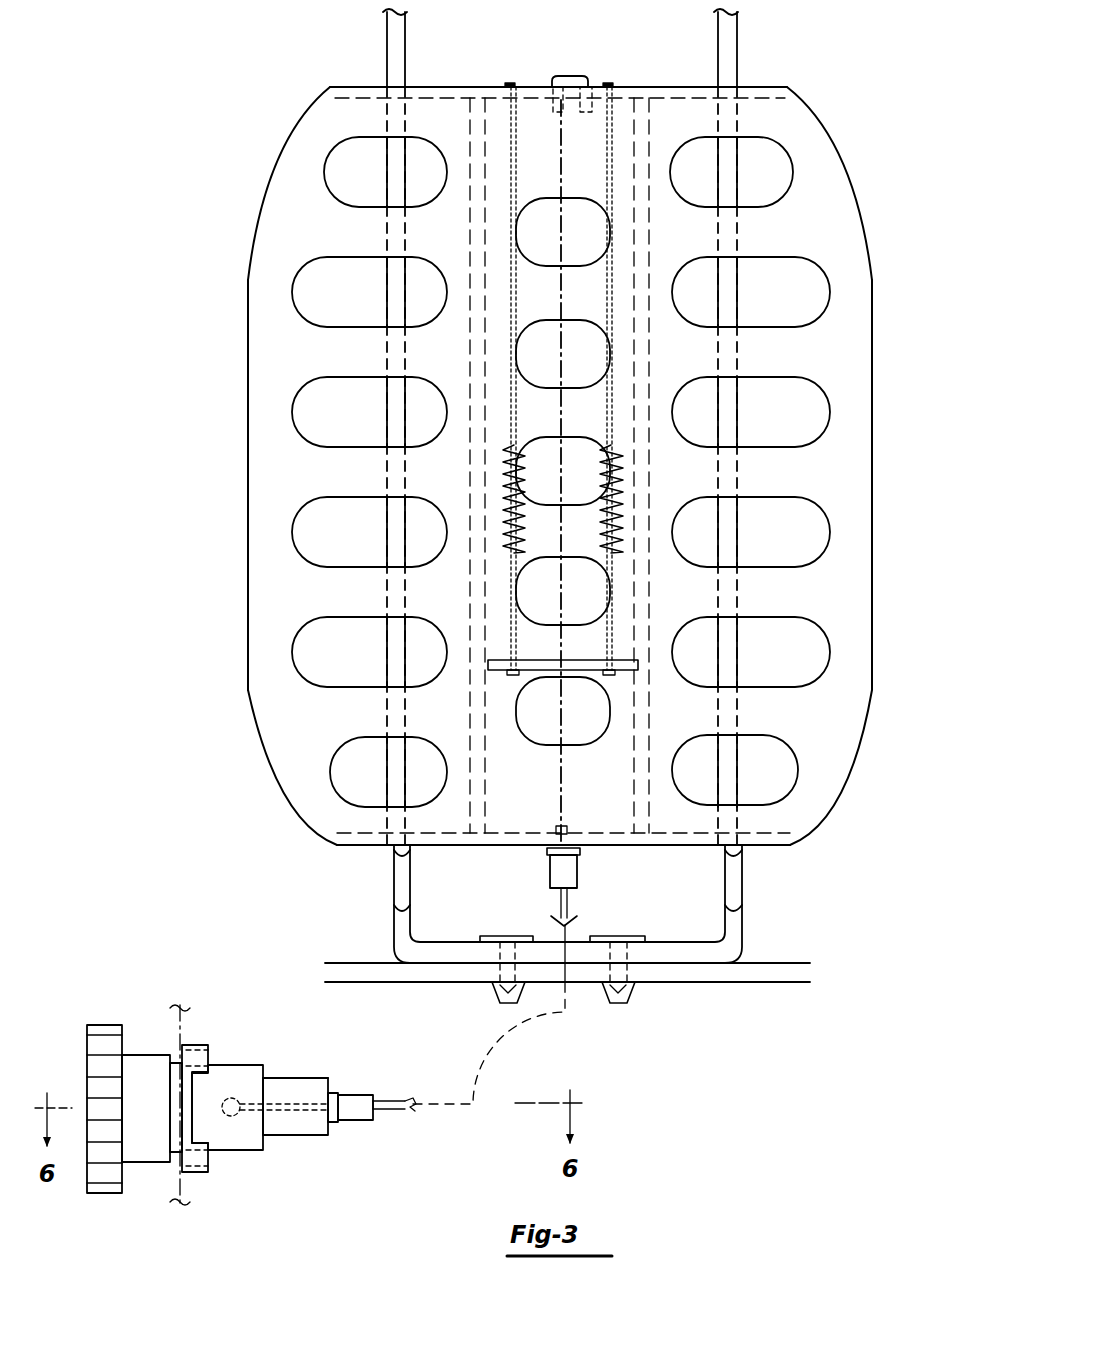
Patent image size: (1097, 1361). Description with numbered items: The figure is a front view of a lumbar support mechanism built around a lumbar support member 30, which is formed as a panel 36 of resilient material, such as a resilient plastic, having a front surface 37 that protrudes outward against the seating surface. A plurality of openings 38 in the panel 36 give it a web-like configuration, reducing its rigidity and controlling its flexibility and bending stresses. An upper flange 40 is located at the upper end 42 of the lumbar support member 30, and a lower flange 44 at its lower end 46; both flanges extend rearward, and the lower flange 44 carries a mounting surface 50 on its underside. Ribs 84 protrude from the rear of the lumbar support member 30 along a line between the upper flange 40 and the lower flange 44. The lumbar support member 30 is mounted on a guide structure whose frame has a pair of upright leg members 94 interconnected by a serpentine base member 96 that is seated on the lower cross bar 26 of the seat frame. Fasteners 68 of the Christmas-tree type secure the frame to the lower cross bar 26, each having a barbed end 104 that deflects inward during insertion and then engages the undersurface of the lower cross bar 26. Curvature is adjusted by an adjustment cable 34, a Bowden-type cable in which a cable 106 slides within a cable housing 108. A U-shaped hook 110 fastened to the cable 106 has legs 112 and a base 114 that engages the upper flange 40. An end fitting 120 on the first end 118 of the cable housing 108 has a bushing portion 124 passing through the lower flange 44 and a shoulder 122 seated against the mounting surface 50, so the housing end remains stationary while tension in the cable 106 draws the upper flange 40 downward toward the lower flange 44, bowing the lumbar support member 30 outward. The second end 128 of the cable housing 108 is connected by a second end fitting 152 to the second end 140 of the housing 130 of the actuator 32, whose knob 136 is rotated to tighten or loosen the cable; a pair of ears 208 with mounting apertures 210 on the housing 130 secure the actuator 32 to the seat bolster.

The lower cross bar 26 is at (790, 983).
The lumbar support member 30 is at (246, 398).
The actuator 32 is at (298, 1147).
The adjustment cable 34 is at (552, 1055).
The panel 36 is at (830, 135).
The front surface 37 is at (248, 600).
The openings 38 is at (295, 415).
The upper flange 40 is at (765, 86).
The upper end 42 is at (330, 108).
The lower flange 44 is at (337, 845).
The lower end 46 is at (800, 835).
The mounting surface 50 is at (762, 850).
The fasteners 68 is at (490, 936).
The ribs 84 is at (470, 123).
The leg members 94 is at (395, 290).
The base member 96 is at (437, 955).
The barbed end 104 is at (498, 1001).
The cable 106 is at (562, 222).
The cable housing 108 is at (570, 910).
The hook 110 is at (591, 79).
The legs 112 is at (563, 113).
The base 114 is at (568, 76).
The first end 118 is at (556, 900).
The end fitting 120 is at (553, 878).
The shoulder 122 is at (582, 850).
The bushing portion 124 is at (566, 825).
The second end 128 is at (376, 1112).
The housing 130 is at (278, 1078).
The knob 136 is at (107, 1195).
The second end 140 is at (338, 1092).
The end fitting 152 is at (307, 1076).
The ears 208 is at (200, 1045).
The mounting apertures 210 is at (180, 1045).